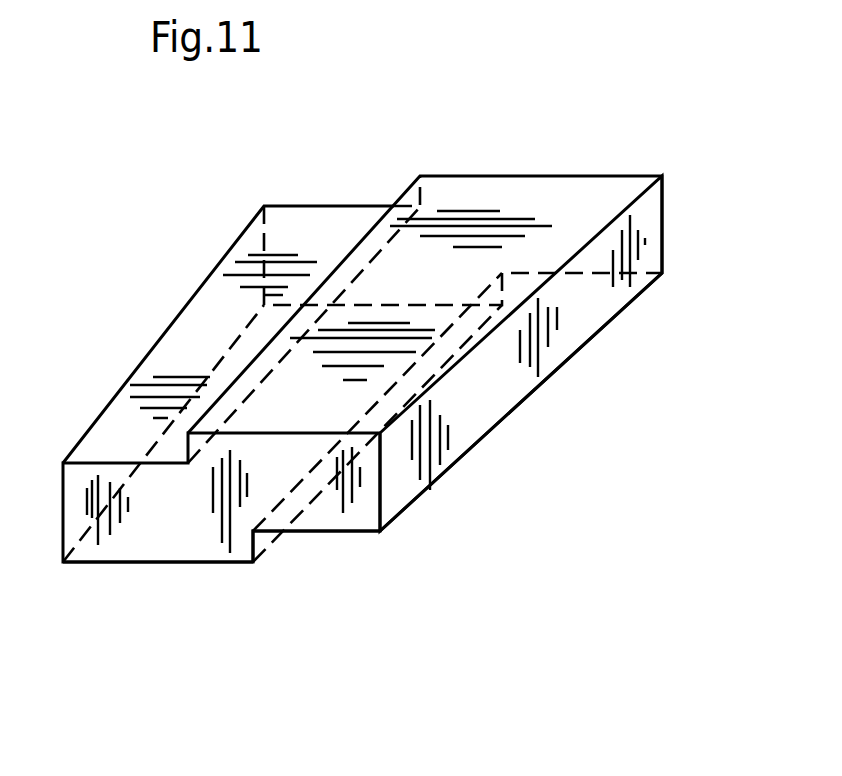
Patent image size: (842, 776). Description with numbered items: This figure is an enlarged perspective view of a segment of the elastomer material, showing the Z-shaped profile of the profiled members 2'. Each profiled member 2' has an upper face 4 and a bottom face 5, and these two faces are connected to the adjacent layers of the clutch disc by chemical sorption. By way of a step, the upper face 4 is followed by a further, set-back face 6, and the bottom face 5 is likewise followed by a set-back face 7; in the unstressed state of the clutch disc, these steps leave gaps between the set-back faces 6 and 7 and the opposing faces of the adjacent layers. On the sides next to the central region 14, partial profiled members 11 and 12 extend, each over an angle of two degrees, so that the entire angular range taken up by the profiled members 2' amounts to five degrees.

The profiled member 2' is at (362, 369).
The upper face 4 is at (543, 175).
The set-back face 6 is at (327, 220).
The partial profiled member 11 is at (132, 545).
The bottom face 5 is at (207, 563).
The central region 14 is at (262, 485).
The set-back face 7 is at (333, 533).
The partial profiled member 12 is at (362, 510).